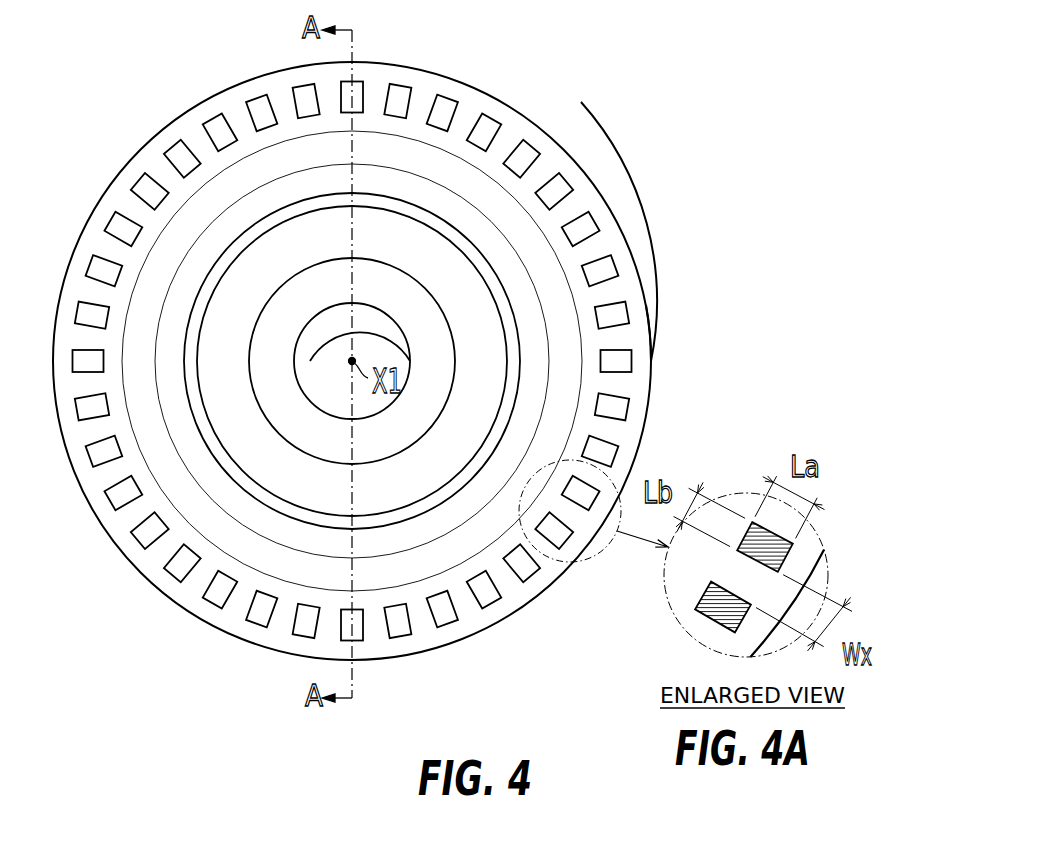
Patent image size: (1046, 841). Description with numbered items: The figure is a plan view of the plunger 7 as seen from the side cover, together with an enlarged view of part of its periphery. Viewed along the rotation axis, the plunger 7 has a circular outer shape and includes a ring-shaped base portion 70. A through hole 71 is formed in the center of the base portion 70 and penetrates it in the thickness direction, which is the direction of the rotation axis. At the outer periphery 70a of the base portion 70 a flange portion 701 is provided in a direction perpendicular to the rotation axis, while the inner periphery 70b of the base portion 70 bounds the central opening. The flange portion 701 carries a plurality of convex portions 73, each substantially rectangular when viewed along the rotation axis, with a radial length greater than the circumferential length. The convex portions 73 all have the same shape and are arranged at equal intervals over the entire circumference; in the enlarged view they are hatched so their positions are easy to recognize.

In FIG. 4, the plunger 7 is at (611, 116).
In FIG. 4, the base portion 70 is at (659, 274).
In FIG. 4, the outer periphery 70a is at (622, 222).
In FIG. 4, the inner periphery 70b is at (384, 311).
In FIG. 4, the flange portion 701 is at (637, 390).
In FIG. 4, the through hole 71 is at (342, 353).
In FIG. 4, the convex portions 73 is at (260, 103).
In FIG. 4A, the convex portions 73 is at (797, 548).